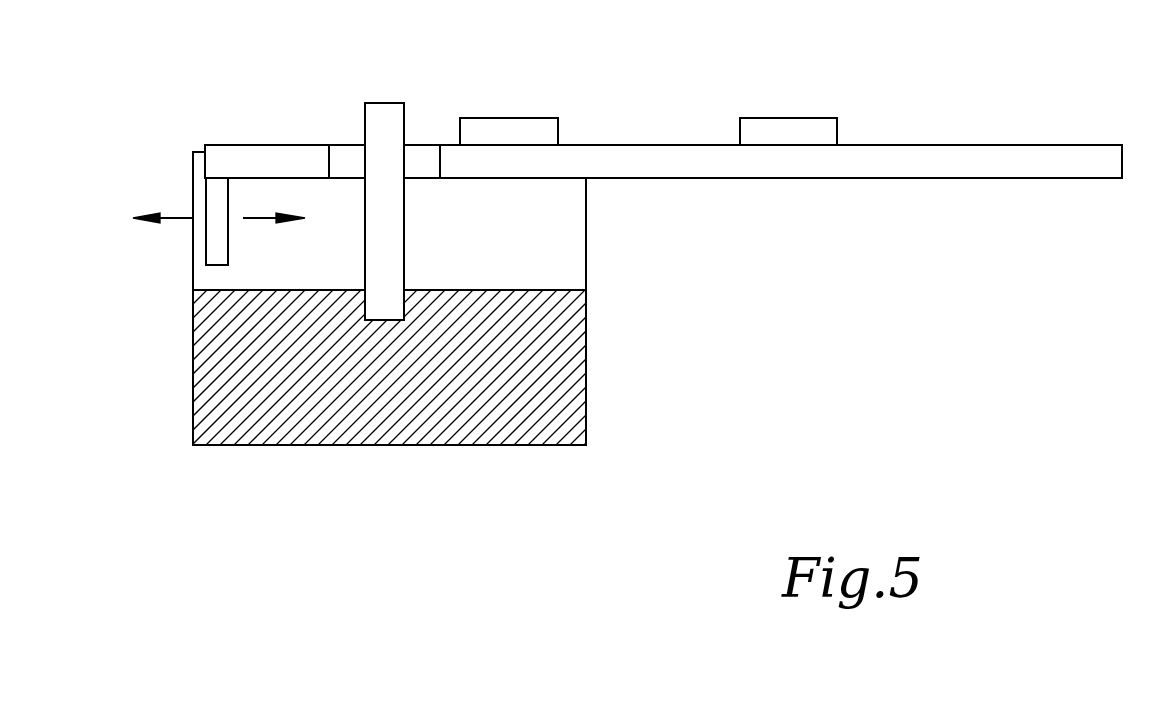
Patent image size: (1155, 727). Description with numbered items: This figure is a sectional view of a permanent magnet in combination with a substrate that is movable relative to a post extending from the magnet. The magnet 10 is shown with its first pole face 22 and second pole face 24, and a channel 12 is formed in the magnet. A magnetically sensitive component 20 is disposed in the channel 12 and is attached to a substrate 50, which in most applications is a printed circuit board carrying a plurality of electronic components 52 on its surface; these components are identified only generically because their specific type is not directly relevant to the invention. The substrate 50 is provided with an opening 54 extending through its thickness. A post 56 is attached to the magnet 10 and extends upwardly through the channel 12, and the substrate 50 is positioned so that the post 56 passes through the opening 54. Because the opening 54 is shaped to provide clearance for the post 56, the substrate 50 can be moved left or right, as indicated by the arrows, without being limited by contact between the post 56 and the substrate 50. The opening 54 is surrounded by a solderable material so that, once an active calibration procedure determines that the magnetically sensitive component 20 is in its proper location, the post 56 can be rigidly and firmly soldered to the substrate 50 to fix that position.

The magnet 10 is at (485, 427).
The channel 12 is at (580, 232).
The magnetically sensitive component 20 is at (212, 197).
The first pole face 22 is at (193, 347).
The second pole face 24 is at (586, 372).
The substrate 50 is at (1008, 152).
The electronic components 52 is at (515, 127).
The opening 54 is at (418, 153).
The post 56 is at (380, 115).